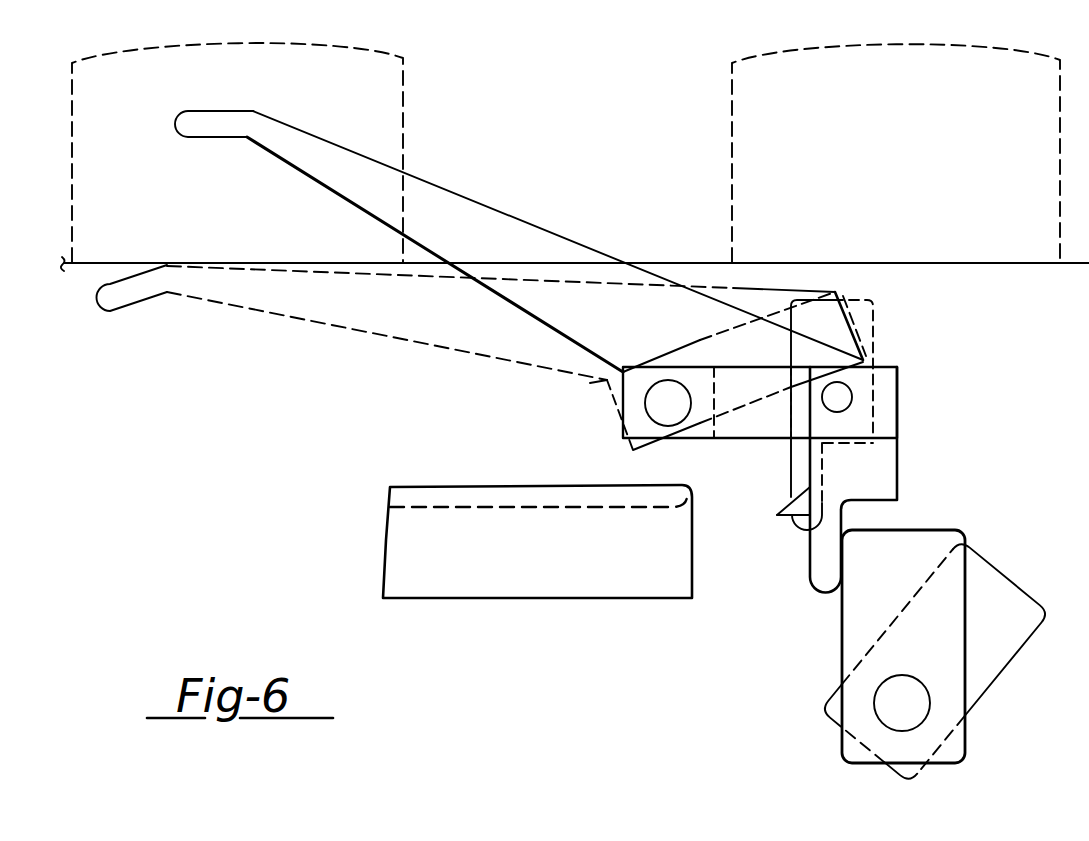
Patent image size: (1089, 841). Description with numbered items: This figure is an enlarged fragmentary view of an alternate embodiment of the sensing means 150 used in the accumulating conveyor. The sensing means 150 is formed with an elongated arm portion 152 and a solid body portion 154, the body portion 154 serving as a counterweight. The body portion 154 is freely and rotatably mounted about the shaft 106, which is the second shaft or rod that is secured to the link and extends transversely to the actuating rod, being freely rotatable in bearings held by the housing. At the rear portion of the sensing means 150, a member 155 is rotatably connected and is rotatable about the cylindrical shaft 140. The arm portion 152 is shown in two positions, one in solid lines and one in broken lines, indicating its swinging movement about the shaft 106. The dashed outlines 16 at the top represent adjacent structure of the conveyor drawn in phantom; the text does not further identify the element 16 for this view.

The frame rail 16 is at (403, 93).
The sensing means 150 is at (583, 235).
The elongated arm portion 152 is at (418, 193).
The solid body portion 154 is at (729, 431).
The second shaft 106 is at (645, 412).
The cylindrical shaft 140 is at (843, 398).
The member 155 is at (897, 438).